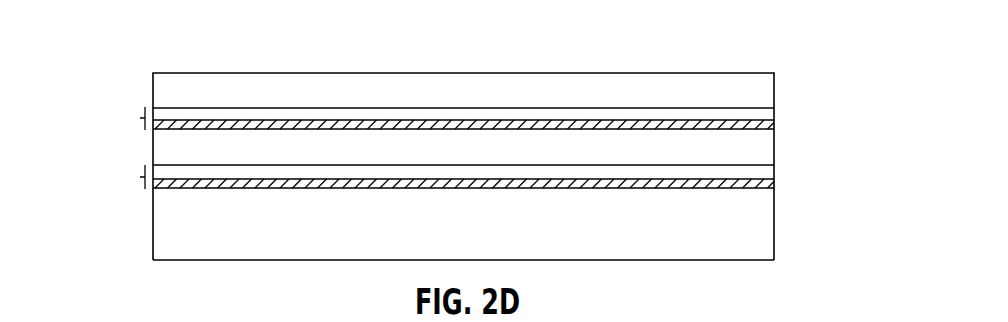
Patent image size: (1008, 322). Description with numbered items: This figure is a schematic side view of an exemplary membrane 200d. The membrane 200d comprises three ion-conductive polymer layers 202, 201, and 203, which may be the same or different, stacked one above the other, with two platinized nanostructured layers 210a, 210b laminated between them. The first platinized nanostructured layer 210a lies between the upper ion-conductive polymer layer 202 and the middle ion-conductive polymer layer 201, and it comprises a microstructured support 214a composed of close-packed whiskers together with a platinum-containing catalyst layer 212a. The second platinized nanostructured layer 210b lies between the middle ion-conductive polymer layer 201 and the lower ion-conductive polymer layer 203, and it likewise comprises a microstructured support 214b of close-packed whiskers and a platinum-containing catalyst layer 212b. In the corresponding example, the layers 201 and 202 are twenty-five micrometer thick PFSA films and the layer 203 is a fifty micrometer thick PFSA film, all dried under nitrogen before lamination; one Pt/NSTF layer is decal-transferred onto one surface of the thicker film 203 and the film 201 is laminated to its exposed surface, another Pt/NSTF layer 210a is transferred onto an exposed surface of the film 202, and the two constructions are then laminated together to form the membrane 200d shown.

The membrane 200d is at (775, 35).
The first ion-conductive polymer layer 202 is at (153, 90).
The platinized nanostructured layer 210a is at (141, 118).
The microstructured support 214a is at (774, 113).
The platinum-containing catalyst layer 212a is at (774, 125).
The first ion-conductive polymer layer 201 is at (153, 152).
The platinized nanostructured layer 210b is at (141, 177).
The microstructured support 214b is at (774, 172).
The platinum-containing catalyst layer 212b is at (774, 185).
The first ion-conductive polymer layer 203 is at (153, 212).